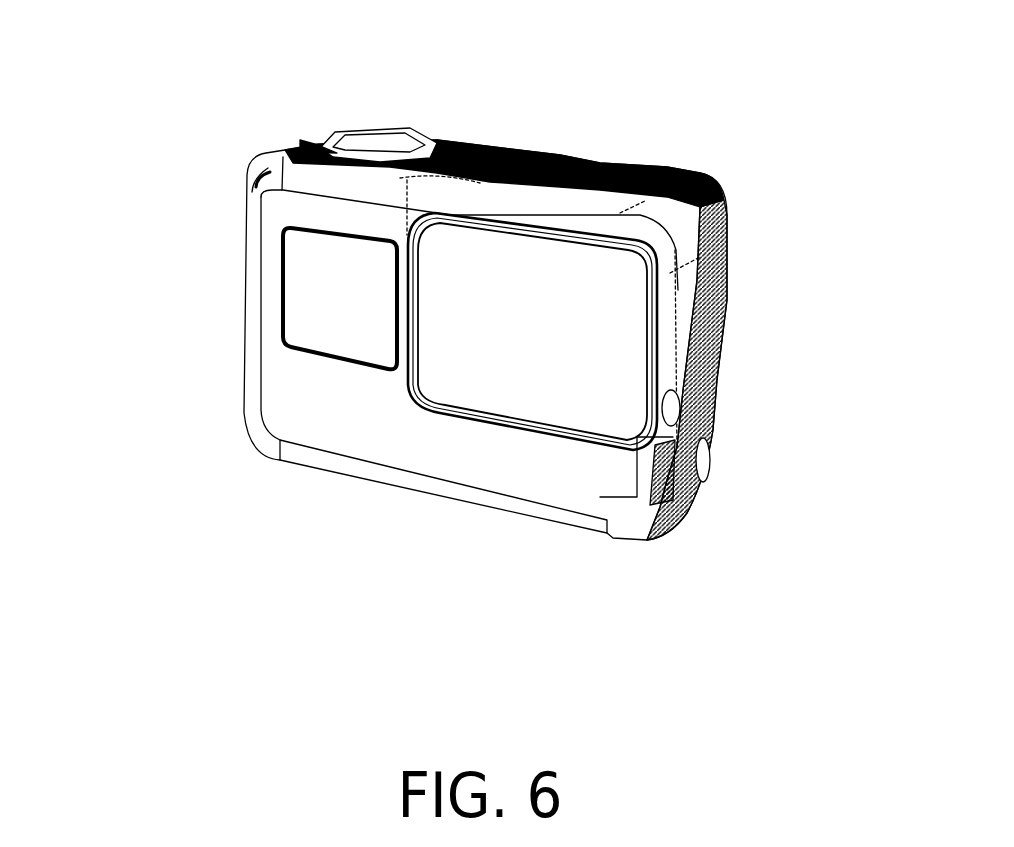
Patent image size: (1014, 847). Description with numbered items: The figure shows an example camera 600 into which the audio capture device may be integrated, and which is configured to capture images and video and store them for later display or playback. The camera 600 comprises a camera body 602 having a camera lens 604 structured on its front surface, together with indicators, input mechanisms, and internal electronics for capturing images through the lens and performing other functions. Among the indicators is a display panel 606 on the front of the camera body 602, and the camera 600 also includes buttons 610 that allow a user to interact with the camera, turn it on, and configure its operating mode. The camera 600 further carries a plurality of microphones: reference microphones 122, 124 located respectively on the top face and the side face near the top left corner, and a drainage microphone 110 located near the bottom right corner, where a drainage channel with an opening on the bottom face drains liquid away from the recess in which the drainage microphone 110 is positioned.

The camera 600 is at (529, 105).
The camera body 602 is at (277, 400).
The camera lens 604 is at (607, 297).
The display panel 606 is at (350, 300).
The buttons 610 is at (372, 140).
The reference microphone 122 is at (285, 150).
The reference microphone 124 is at (237, 201).
The drainage microphone 110 is at (673, 470).